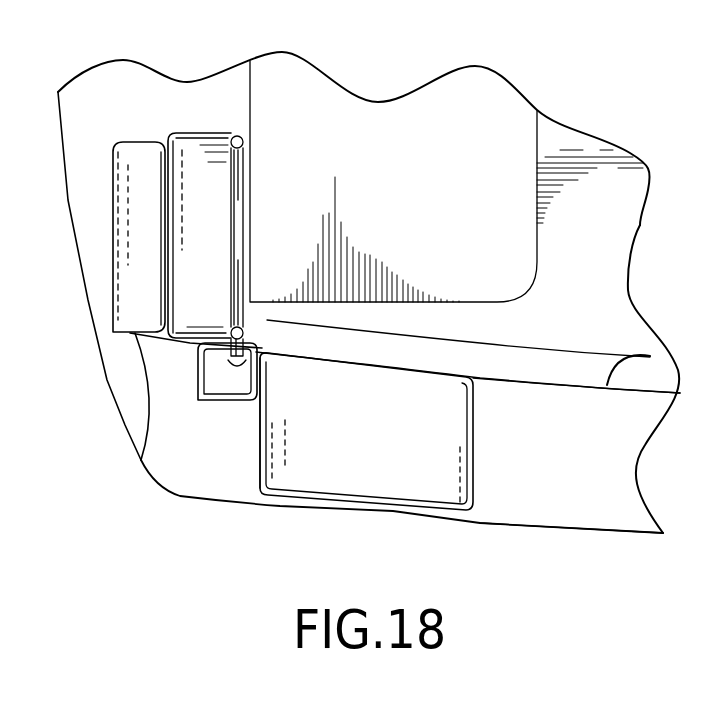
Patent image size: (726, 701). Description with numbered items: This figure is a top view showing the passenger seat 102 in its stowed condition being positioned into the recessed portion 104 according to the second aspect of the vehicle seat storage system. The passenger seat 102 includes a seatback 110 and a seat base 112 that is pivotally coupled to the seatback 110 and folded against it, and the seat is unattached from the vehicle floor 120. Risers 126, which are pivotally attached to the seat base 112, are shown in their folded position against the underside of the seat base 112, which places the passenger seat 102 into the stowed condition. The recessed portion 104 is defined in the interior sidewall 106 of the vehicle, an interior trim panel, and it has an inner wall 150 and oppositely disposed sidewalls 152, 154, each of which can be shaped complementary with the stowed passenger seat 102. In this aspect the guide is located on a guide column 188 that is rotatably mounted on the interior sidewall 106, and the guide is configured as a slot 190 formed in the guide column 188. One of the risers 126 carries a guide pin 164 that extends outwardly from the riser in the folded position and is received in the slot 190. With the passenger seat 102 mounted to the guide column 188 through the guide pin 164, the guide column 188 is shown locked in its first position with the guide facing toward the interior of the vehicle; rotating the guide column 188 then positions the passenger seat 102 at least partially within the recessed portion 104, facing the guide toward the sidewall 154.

The passenger seat 102 is at (153, 115).
The recessed portion 104 is at (333, 485).
The interior sidewall 106 is at (643, 352).
The seatback 110 is at (132, 315).
The seat base 112 is at (202, 163).
The floor 120 is at (607, 291).
The risers 126 is at (243, 168).
The inner wall 150 is at (393, 510).
The sidewall 152 is at (257, 460).
The sidewall 154 is at (480, 446).
The guide pin 164 is at (247, 358).
The guide column 188 is at (222, 403).
The slot 190 is at (227, 350).